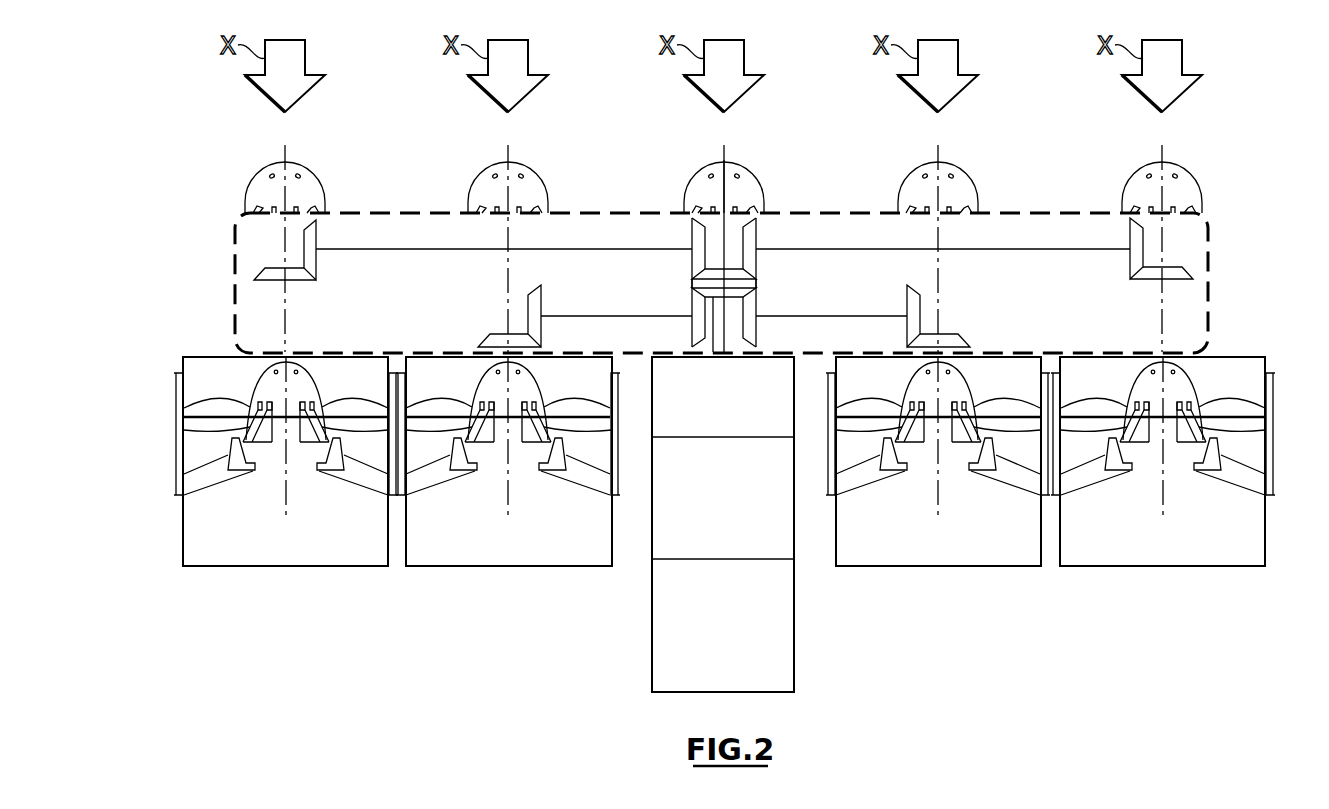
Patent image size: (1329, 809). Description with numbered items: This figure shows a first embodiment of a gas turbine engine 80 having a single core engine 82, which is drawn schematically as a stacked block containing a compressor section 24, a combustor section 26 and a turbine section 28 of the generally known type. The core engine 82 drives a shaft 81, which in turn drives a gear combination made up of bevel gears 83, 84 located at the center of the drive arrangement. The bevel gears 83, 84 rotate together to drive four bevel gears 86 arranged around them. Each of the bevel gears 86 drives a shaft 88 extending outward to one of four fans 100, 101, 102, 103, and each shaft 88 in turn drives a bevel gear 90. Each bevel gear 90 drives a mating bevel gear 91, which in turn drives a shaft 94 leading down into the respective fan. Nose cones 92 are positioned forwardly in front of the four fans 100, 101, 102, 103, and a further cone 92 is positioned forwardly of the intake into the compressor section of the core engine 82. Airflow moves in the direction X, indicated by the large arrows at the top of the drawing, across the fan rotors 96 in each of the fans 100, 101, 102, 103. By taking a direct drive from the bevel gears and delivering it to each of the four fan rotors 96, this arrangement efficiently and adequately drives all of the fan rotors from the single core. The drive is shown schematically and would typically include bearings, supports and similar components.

The gas turbine engine 80 is at (1225, 150).
The shaft 81 is at (724, 343).
The core engine 82 is at (698, 524).
The bevel gear 83 is at (726, 272).
The bevel gear 84 is at (738, 289).
The bevel gears 86 is at (757, 234).
The shaft 88 is at (486, 249).
The bevel gear 90 is at (318, 230).
The bevel gear 91 is at (273, 282).
The nose cone 92 is at (258, 183).
The shaft 94 is at (286, 316).
The fan rotor 96 is at (217, 423).
The fan 100 is at (307, 550).
The fan 101 is at (530, 550).
The fan 102 is at (960, 550).
The fan 103 is at (1183, 550).
The compressor section 24 is at (710, 409).
The combustor section 26 is at (710, 512).
The turbine section 28 is at (710, 634).